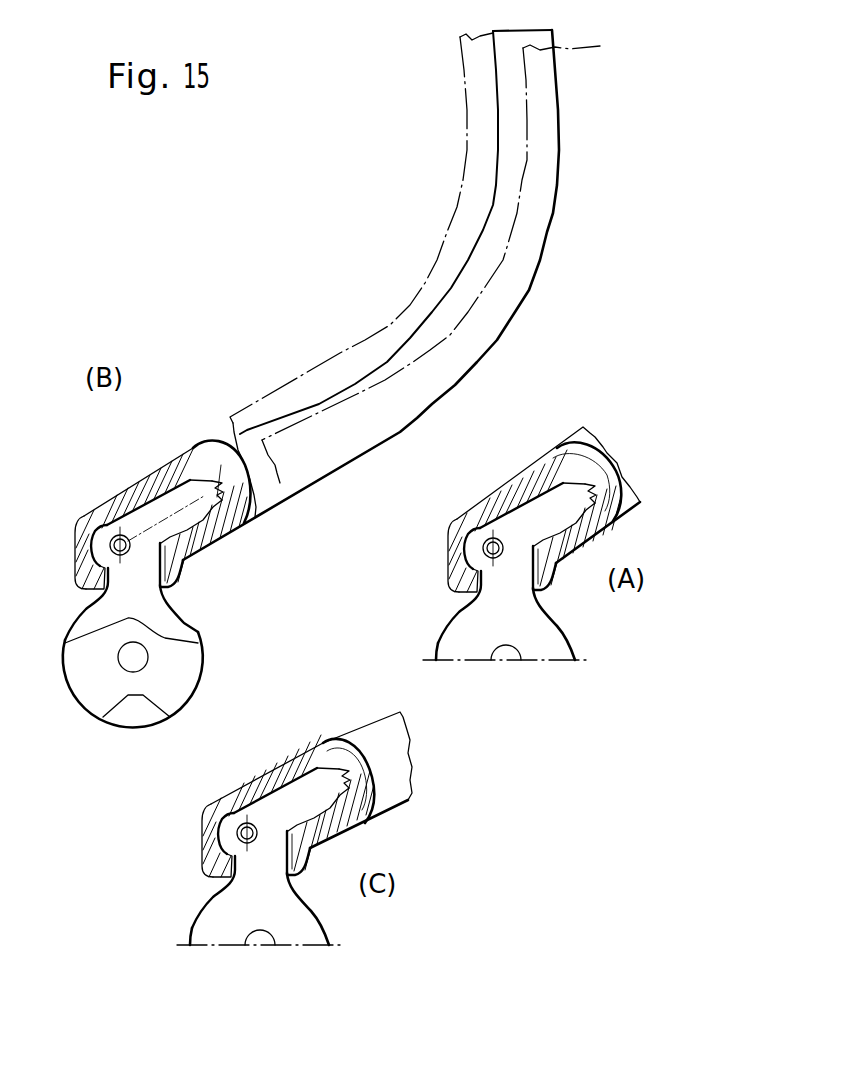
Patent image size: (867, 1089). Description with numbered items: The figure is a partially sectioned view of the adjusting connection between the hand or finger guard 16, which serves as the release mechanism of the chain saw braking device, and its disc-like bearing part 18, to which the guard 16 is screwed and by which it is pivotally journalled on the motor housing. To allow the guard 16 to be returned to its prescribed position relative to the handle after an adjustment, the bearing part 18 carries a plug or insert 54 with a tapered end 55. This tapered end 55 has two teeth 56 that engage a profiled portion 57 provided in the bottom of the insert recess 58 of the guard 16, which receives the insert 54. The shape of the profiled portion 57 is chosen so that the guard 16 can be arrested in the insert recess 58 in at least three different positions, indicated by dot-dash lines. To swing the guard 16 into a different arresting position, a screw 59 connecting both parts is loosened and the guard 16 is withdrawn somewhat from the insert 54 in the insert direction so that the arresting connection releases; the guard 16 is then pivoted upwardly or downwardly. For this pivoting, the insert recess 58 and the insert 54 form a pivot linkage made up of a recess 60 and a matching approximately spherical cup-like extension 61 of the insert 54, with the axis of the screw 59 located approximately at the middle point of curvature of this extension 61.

The hand or finger guard 16 is at (545, 230).
The bearing part 18 is at (202, 631).
The plug or insert 54 is at (150, 527).
The tapered end 55 is at (212, 481).
The teeth 56 is at (222, 497).
The profiled portion 57 is at (222, 502).
The insert recess 58 is at (195, 477).
The screw 59 is at (150, 545).
The recess 60 is at (104, 570).
The spherical cup-like extension 61 is at (107, 527).